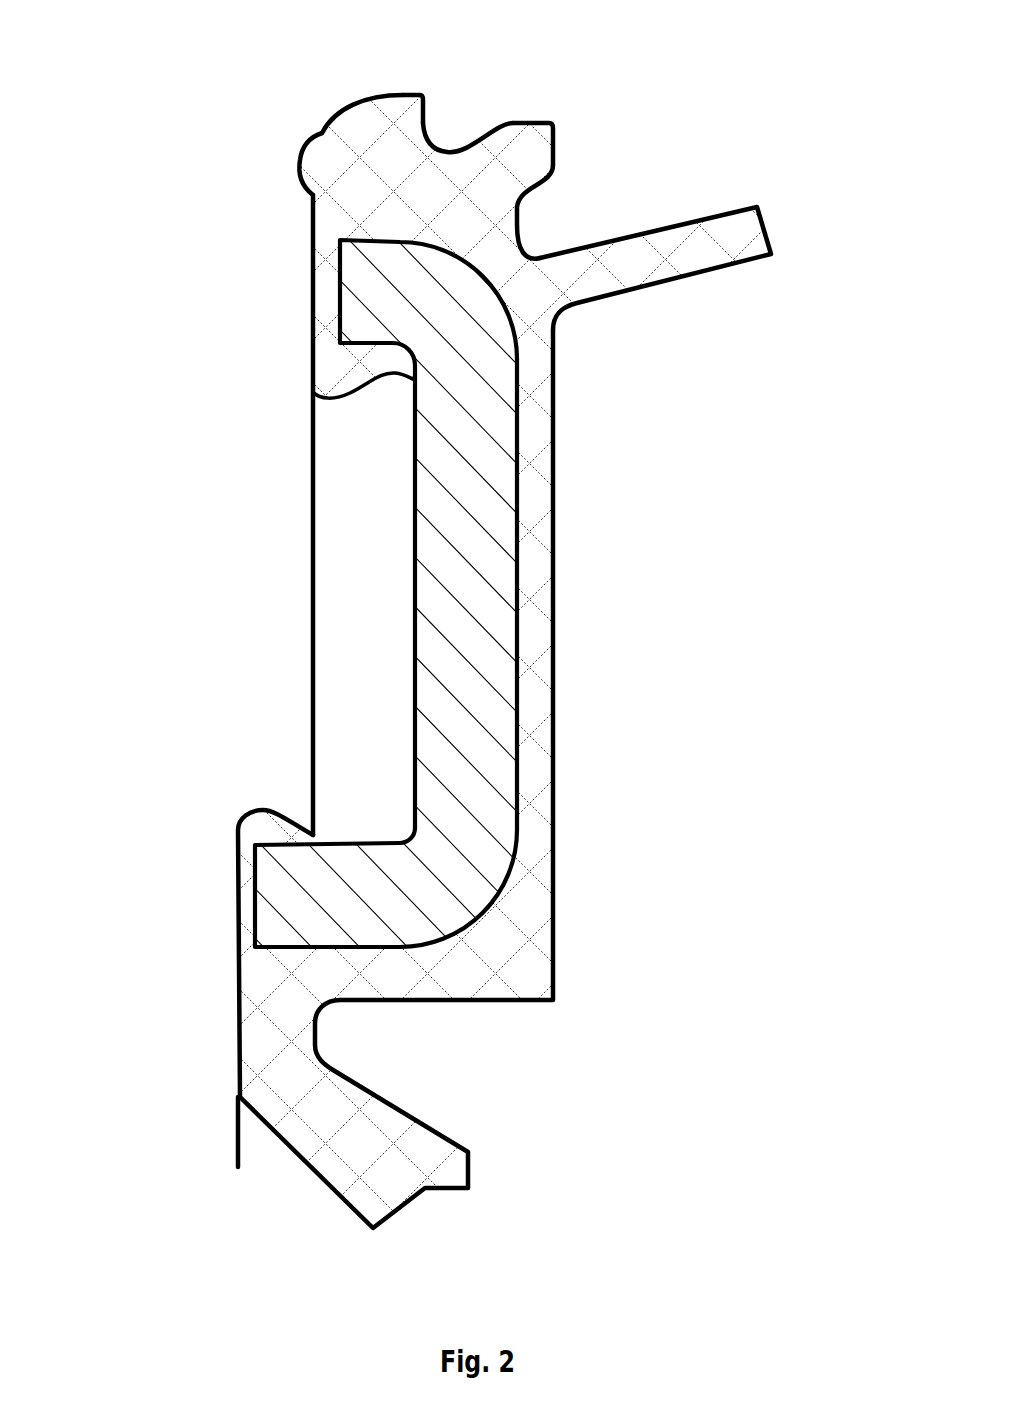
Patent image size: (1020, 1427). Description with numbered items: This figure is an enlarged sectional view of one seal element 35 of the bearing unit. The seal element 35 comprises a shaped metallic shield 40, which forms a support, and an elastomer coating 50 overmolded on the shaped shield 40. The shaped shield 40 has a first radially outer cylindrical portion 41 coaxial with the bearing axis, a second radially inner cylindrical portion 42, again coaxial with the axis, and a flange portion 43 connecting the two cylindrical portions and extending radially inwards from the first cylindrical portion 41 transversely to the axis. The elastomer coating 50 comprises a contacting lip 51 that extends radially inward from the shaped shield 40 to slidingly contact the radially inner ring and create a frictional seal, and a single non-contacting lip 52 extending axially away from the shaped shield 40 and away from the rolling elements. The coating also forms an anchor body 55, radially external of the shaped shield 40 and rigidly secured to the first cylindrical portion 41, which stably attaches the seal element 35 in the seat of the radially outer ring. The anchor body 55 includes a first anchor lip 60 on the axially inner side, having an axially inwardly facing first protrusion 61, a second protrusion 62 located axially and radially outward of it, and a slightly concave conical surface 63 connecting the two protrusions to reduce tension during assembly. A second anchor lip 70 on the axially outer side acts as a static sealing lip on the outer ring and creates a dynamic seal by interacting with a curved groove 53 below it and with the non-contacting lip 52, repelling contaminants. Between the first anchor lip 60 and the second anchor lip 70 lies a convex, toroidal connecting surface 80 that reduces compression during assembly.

The seal element 35 is at (130, 346).
The shaped metallic shield 40 is at (530, 499).
The first radially outer cylindrical portion 41 is at (370, 320).
The second radially inner cylindrical portion 42 is at (310, 901).
The flange portion 43 is at (440, 578).
The elastomer coating 50 is at (566, 684).
The contacting lip 51 is at (425, 1158).
The non-contacting lip 52 is at (702, 262).
The groove 53 is at (530, 225).
The anchor body 55 is at (512, 90).
The first anchor lip 60 is at (377, 142).
The first protrusion 61 is at (290, 158).
The second protrusion 62 is at (409, 84).
The slightly concave conical surface 63 is at (355, 108).
The second anchor lip 70 is at (532, 153).
The convex connecting surface 80 is at (454, 141).